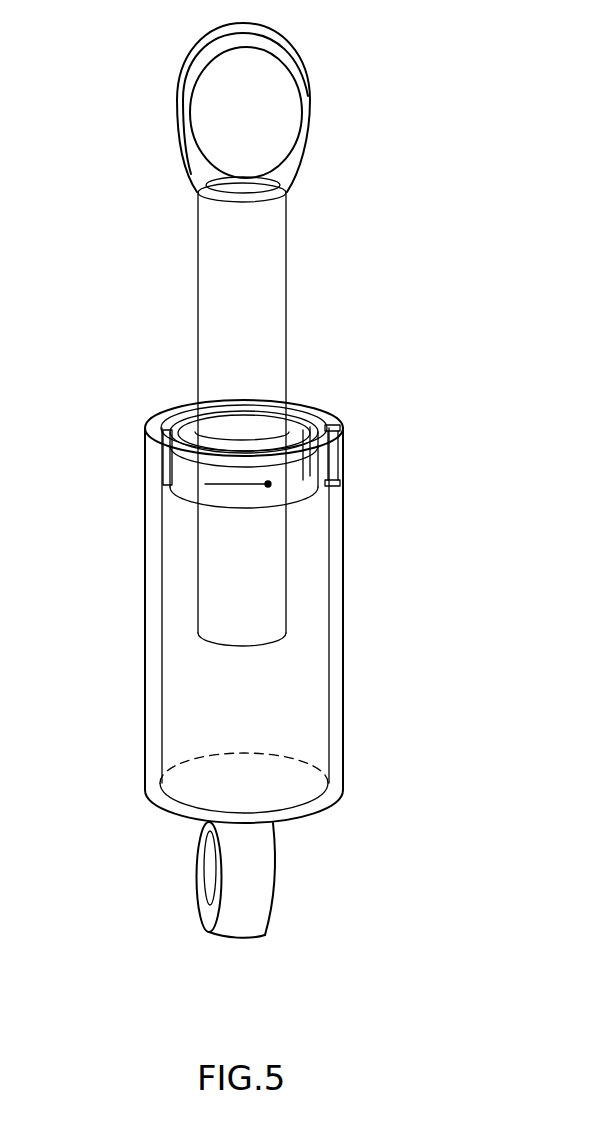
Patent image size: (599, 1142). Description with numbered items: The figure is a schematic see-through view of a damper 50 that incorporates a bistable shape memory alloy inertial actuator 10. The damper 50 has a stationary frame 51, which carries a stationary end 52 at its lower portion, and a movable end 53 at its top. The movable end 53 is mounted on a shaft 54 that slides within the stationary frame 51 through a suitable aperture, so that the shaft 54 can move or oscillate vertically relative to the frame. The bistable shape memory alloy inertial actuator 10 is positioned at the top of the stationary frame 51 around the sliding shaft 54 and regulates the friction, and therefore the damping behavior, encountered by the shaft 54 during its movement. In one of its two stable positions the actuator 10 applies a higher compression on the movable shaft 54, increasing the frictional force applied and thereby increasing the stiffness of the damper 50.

The damper 50 is at (362, 246).
The stationary frame 51 is at (305, 681).
The stationary end 52 is at (265, 870).
The movable end 53 is at (188, 80).
The shaft 54 is at (222, 312).
The bistable shape memory alloy inertial actuator 10 is at (160, 462).